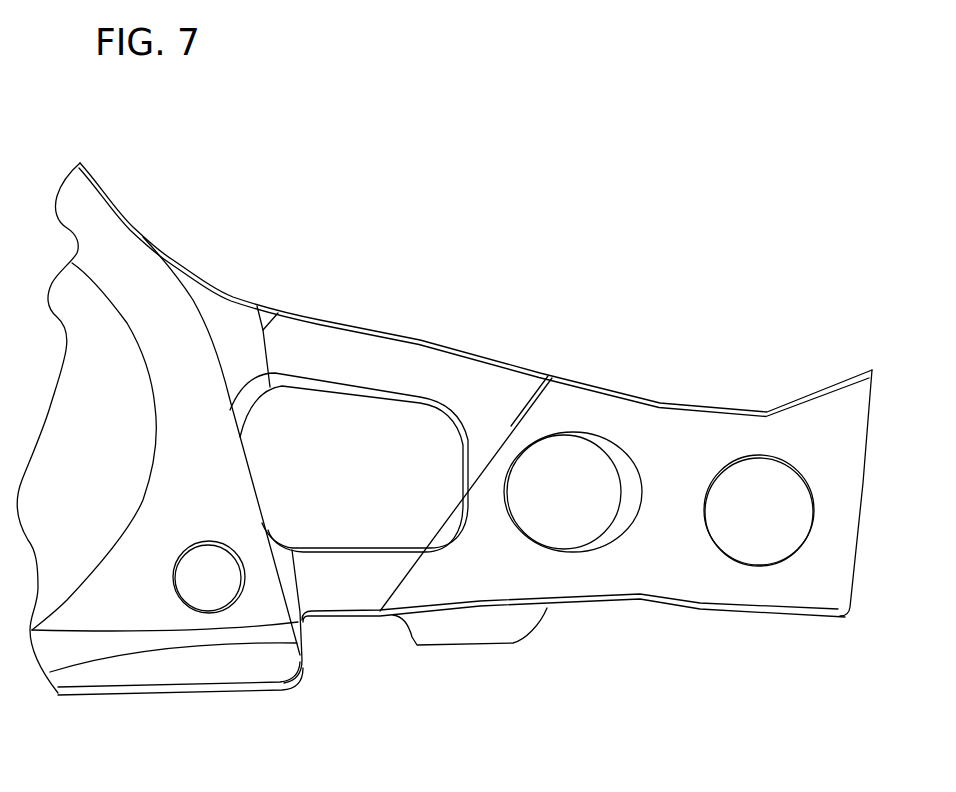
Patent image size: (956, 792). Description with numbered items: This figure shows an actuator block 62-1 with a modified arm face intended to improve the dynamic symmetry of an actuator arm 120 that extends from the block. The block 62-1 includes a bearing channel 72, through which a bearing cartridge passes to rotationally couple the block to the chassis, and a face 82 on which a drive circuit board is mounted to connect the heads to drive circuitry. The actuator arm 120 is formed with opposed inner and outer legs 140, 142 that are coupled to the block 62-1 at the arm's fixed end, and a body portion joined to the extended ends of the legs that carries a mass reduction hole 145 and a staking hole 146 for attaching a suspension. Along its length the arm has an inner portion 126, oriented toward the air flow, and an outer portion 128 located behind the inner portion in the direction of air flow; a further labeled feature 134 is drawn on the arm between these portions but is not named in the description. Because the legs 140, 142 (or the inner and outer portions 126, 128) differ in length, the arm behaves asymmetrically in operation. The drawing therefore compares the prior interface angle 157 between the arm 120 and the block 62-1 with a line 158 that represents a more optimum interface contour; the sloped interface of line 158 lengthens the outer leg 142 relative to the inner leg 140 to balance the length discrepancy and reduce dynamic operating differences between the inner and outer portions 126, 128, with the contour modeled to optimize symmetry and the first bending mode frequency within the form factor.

The actuator block 62-1 is at (118, 246).
The bearing channel 72 is at (118, 518).
The face 82 is at (237, 682).
The actuator arm 120 is at (680, 422).
The inner portion 126 is at (426, 378).
The outer portion 128 is at (492, 570).
The rib 134 is at (510, 430).
The inner leg 140 is at (360, 356).
The outer leg 142 is at (345, 595).
The mass reduction hole 145 is at (583, 505).
The staking hole 146 is at (782, 526).
The prior interface angle 157 is at (208, 334).
The line 158 is at (278, 312).